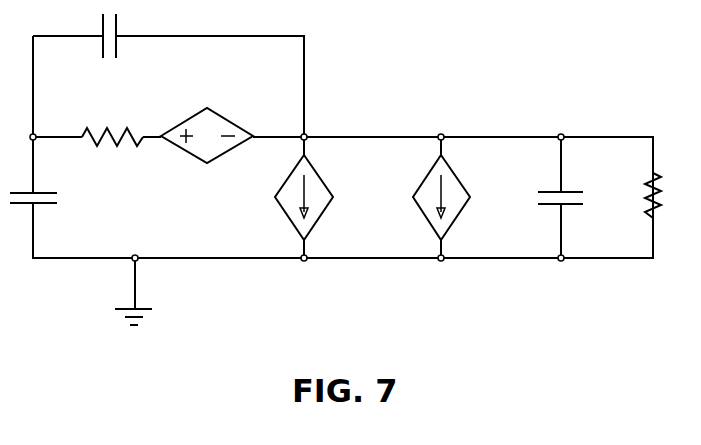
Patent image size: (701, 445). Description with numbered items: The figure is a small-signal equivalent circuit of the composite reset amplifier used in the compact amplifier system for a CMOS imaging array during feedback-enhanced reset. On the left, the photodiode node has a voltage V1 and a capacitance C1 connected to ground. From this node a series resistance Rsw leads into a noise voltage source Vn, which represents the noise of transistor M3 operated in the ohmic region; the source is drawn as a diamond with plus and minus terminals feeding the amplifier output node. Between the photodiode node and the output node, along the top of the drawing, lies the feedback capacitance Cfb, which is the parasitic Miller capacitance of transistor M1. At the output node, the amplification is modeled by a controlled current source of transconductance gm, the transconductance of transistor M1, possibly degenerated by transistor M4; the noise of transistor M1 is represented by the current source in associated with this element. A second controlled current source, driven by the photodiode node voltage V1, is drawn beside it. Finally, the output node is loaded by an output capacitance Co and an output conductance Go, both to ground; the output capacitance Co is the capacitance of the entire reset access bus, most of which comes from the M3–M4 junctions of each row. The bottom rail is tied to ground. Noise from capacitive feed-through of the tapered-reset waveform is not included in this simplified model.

The feedback capacitance Cfb is at (107, 56).
The switch resistance Rsw is at (112, 156).
The voltage source Vn is at (207, 154).
The current source in is at (255, 197).
The transconductance gm is at (322, 197).
The photodiode node voltage V1 is at (426, 197).
The output capacitance Co is at (538, 195).
The output conductance Go is at (633, 195).
The photodiode node capacitance C1 is at (50, 204).